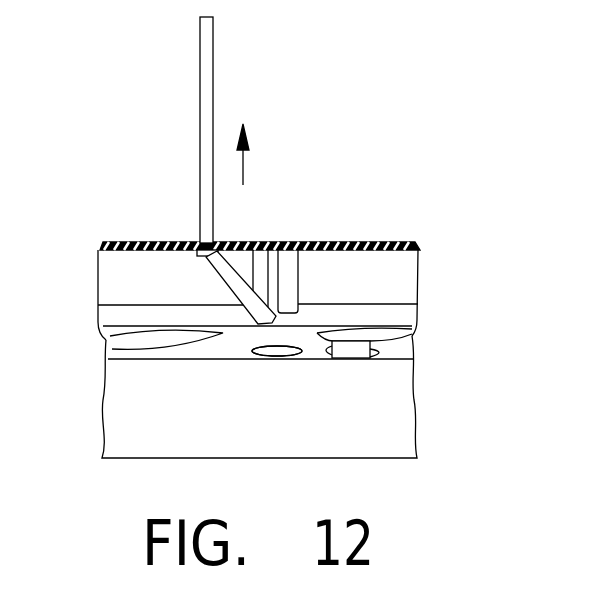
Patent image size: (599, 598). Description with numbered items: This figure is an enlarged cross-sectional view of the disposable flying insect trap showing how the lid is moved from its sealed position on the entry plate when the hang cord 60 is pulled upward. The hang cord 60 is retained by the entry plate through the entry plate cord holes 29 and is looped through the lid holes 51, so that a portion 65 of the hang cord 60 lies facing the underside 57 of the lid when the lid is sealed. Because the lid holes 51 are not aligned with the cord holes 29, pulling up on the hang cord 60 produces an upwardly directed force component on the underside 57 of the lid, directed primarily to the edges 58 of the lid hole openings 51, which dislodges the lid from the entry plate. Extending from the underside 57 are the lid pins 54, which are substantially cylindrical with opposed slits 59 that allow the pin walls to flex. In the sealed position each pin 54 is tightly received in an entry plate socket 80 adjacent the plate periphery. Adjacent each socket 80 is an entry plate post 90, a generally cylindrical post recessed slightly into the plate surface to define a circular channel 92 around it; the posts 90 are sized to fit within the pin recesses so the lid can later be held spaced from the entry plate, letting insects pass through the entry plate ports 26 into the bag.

The entry plate port 26 is at (115, 340).
The entry plate cord hole 29 is at (257, 332).
The lid hole 51 is at (198, 242).
The lid pin 54 is at (294, 268).
The underside of the lid 57 is at (388, 256).
The edge of lid hole opening 58 is at (206, 258).
The slit 59 is at (282, 286).
The hang cord 60 is at (200, 52).
The portion of the hang cord 65 is at (236, 284).
The entry plate socket 80 is at (283, 349).
The entry plate post 90 is at (410, 351).
The circular channel 92 is at (372, 357).